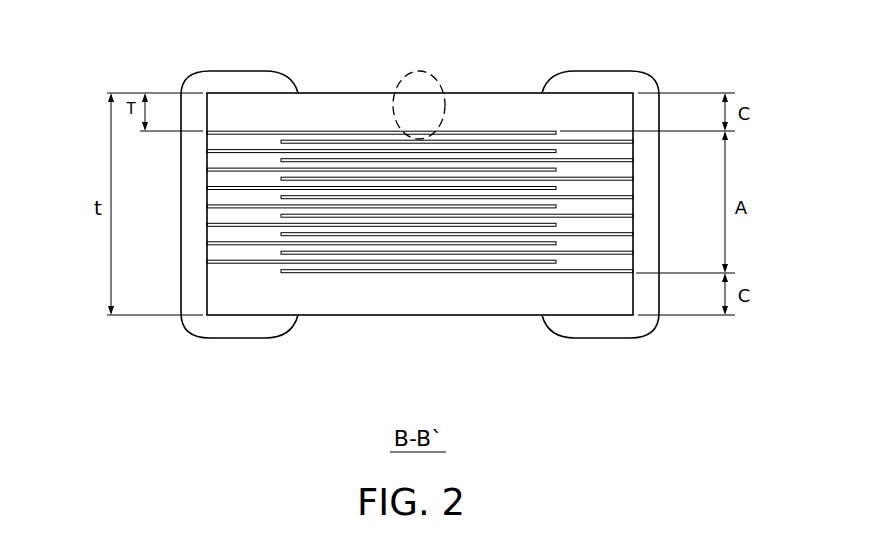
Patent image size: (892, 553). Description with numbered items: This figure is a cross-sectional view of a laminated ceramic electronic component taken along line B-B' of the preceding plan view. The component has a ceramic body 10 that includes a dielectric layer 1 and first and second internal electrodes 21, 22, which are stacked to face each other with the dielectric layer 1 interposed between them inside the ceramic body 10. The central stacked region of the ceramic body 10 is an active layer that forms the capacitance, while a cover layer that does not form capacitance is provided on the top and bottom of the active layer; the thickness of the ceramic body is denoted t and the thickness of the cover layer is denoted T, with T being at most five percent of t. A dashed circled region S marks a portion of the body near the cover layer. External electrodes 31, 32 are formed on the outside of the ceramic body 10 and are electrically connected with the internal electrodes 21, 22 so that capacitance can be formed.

The dielectric layer 1 is at (460, 202).
The ceramic body 10 is at (422, 317).
The first internal electrode 21 is at (595, 177).
The second internal electrode 22 is at (547, 190).
The external electrode 31 is at (230, 325).
The external electrode 32 is at (602, 325).
The surface region S is at (441, 83).